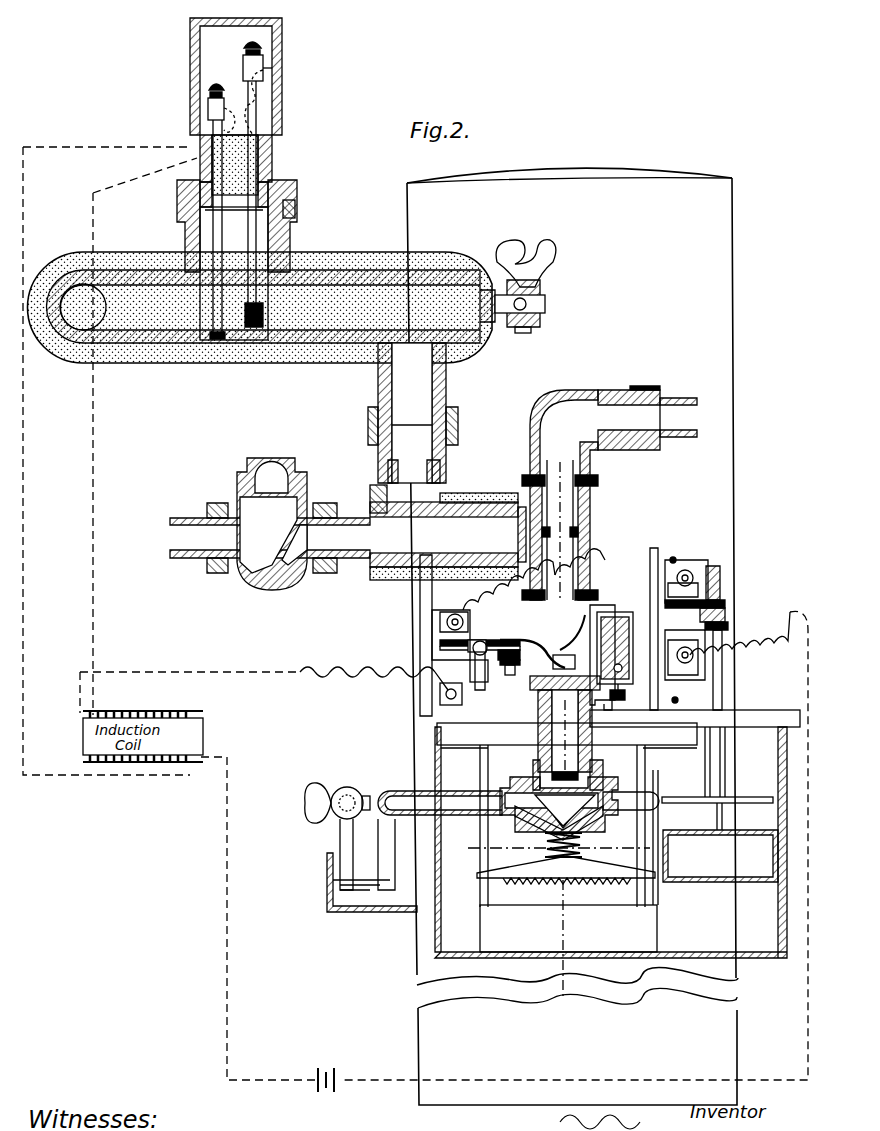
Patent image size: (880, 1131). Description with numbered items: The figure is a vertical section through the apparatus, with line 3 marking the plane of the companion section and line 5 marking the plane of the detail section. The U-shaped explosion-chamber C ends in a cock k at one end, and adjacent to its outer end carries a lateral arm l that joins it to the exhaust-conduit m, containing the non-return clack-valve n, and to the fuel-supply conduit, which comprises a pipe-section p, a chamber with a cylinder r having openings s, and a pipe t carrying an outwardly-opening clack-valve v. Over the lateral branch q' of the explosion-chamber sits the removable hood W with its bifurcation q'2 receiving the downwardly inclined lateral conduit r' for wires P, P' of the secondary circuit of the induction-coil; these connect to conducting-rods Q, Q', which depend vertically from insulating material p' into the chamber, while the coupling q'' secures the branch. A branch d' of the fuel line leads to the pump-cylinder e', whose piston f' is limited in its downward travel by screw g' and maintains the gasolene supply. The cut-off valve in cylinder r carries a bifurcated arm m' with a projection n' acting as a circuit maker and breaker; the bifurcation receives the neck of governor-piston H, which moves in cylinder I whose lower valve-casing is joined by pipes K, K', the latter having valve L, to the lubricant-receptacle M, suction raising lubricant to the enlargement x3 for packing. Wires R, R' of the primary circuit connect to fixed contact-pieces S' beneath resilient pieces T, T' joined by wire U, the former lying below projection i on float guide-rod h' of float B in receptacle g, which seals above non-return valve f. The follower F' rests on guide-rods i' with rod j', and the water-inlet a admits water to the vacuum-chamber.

The section line 3 is at (556, 1120).
The removable hood W is at (283, 42).
The insulating material p' is at (263, 165).
The wire P' is at (278, 184).
The bifurcation q'2 is at (294, 69).
The wire P is at (195, 211).
The conducting-rod Q is at (223, 260).
The coupling nut q'' is at (303, 219).
The conducting-rod Q' is at (234, 249).
The explosion-chamber C is at (262, 307).
The cock k is at (530, 300).
The lateral arm l is at (420, 410).
The pipe-section p is at (444, 523).
The exhaust-conduit m is at (436, 525).
The non-return clack-valve n is at (270, 524).
The branch of the explosion-chamber q' is at (581, 495).
The cylinder r is at (591, 530).
The openings s is at (540, 540).
The pipe t is at (680, 412).
The pump-cylinder e' is at (605, 639).
The piston f' is at (615, 648).
The screw g' is at (623, 697).
The lateral bifurcated arm m' is at (568, 642).
The lateral projection n' is at (531, 641).
The resilient contact-piece T' is at (480, 653).
The fixed contact-piece S' is at (575, 657).
The wire U is at (478, 610).
The outwardly-opening clack-valve v is at (571, 586).
The wire R' is at (381, 686).
The cap x3 is at (545, 692).
The governor-piston H is at (558, 728).
The cylinder I is at (594, 765).
The branch d' is at (617, 834).
The pipe K is at (440, 791).
The lateral conduit r' is at (579, 808).
The guide-rods i' is at (613, 817).
The section line 5 is at (480, 850).
The rod j' is at (574, 845).
The lever F' is at (566, 876).
The float B is at (685, 855).
The receptacle g is at (740, 912).
The non-return valve f is at (568, 928).
The water-inlet a is at (592, 940).
The resilient contact-piece T is at (685, 626).
The lateral projection i is at (709, 610).
The guide-rod h' is at (711, 670).
The wire R is at (740, 634).
The pipe K' is at (362, 794).
The valve L is at (333, 818).
The lubricant-receptacle M is at (364, 910).